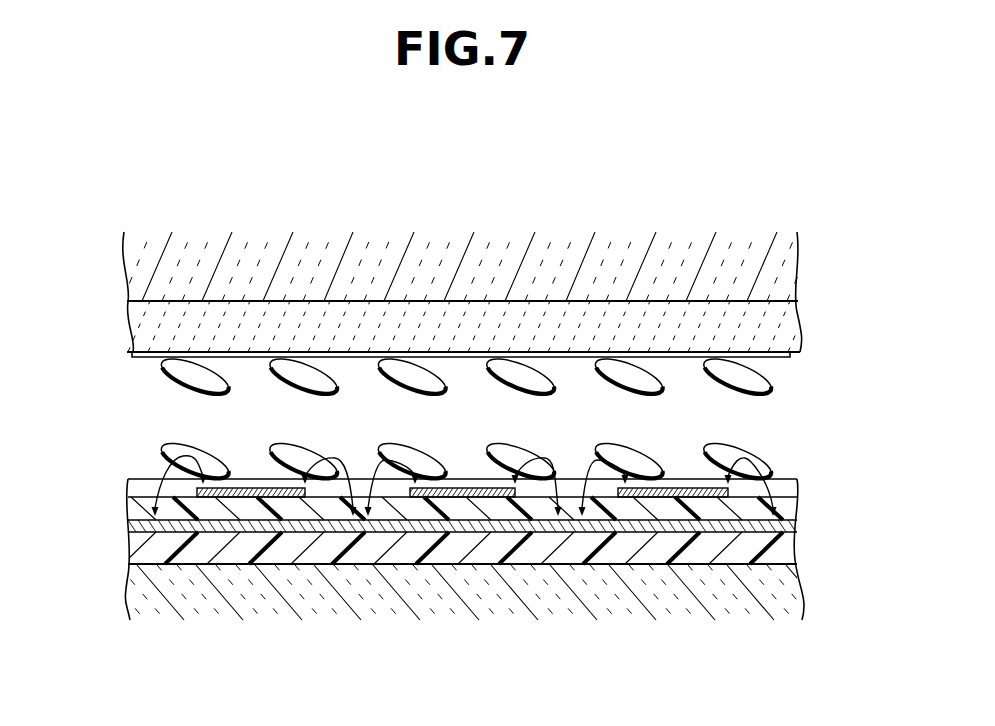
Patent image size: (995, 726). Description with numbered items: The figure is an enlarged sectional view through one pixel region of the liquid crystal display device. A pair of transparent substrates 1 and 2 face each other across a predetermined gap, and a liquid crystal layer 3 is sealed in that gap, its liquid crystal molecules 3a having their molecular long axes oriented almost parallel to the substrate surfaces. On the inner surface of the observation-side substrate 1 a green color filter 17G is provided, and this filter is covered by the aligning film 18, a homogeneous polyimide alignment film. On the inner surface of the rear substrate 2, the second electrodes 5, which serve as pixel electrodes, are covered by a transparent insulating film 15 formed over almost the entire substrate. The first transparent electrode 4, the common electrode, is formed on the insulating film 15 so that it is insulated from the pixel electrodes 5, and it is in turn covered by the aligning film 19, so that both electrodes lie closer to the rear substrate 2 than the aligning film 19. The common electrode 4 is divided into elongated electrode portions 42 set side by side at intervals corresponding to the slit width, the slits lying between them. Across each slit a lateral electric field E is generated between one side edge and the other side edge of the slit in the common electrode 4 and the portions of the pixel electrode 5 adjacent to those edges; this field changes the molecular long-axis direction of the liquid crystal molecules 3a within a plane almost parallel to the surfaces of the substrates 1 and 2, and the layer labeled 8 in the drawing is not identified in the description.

The transparent substrate 1 is at (768, 263).
The green color filter 17G is at (396, 335).
The liquid crystal layer 3 is at (579, 428).
The liquid crystal molecules 3a is at (178, 447).
The first transparent electrode 4 is at (252, 478).
The aligning film 18 is at (772, 359).
The aligning film 19 is at (778, 477).
The transparent insulating film 15 is at (780, 505).
The second electrode 5 is at (375, 542).
The anode electrode 8 is at (778, 547).
The transparent substrate 2 is at (776, 589).
The elongated electrode portions 42 is at (247, 497).
The lateral electric field E is at (335, 458).